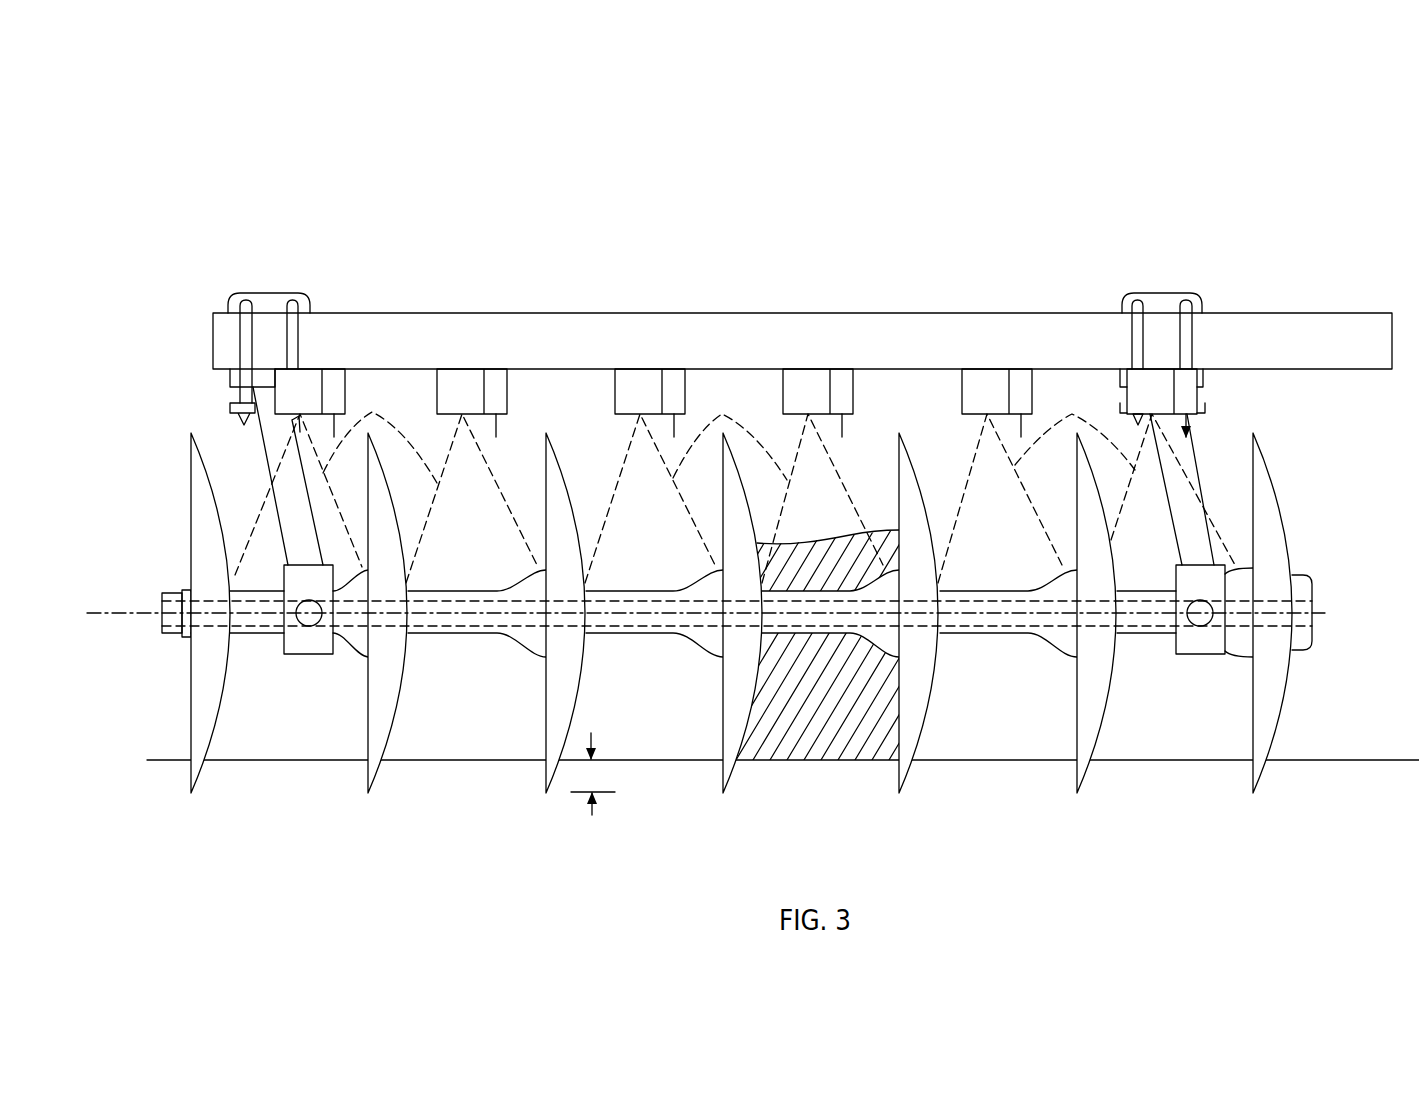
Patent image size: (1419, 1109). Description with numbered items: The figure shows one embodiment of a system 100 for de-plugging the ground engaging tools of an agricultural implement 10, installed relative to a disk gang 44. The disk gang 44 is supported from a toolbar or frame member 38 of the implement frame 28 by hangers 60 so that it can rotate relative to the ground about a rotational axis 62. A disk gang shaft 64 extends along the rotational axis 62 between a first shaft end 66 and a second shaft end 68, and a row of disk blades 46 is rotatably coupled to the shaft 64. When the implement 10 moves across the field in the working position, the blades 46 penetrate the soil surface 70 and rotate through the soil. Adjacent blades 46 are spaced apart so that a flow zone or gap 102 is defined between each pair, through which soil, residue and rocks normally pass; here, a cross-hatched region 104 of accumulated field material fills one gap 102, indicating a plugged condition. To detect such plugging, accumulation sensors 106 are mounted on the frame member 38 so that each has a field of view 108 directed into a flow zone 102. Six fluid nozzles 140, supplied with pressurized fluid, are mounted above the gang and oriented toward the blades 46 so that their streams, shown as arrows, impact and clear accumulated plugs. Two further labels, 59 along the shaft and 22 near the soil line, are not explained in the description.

The agricultural implement 10 is at (1296, 156).
The system for de-plugging ground engaging tools 100 is at (231, 261).
The accumulation sensor 106 is at (1147, 395).
The fluid nozzle 140 is at (1184, 395).
The implement frame 28 is at (1263, 306).
The frame member 38 is at (1365, 330).
The disk gang 44 is at (119, 399).
The hanger 60 is at (275, 428).
The first shaft end 66 is at (164, 524).
The second shaft end 68 is at (1293, 519).
The rotational axis 62 is at (132, 612).
The disk gang shaft 64 is at (257, 628).
The spacer 59 is at (478, 633).
The field of view 108 is at (735, 480).
The cross-hatched region 104 is at (835, 553).
The depth below soil surface 22 is at (592, 812).
The disk blade 46 is at (1237, 842).
The soil surface 70 is at (1318, 761).
The flow zone or gap 102 is at (274, 722).